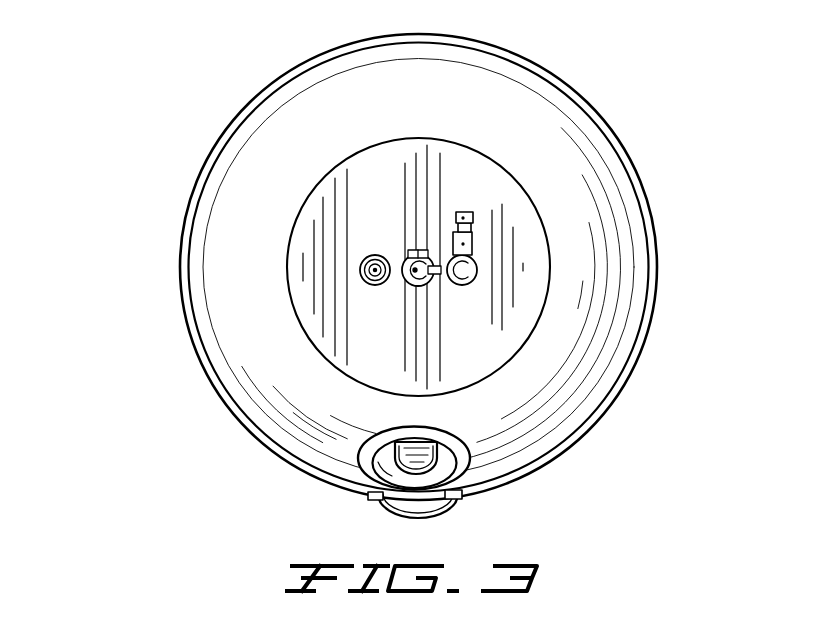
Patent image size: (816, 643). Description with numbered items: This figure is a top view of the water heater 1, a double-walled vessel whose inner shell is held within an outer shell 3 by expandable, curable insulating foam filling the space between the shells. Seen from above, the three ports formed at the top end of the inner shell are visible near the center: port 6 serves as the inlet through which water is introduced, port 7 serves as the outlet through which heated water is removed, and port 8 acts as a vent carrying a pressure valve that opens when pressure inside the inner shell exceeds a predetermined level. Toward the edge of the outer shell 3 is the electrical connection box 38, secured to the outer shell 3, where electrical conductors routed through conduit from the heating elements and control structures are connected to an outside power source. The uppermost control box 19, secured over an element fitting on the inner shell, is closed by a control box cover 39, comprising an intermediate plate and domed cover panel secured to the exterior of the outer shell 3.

The water heater 1 is at (190, 97).
The outer shell 3 is at (540, 113).
The port 6 is at (362, 261).
The port 7 is at (478, 268).
The port 8 is at (406, 255).
The control box 19 is at (372, 512).
The electrical connection box 38 is at (473, 461).
The control box cover 39 is at (452, 517).